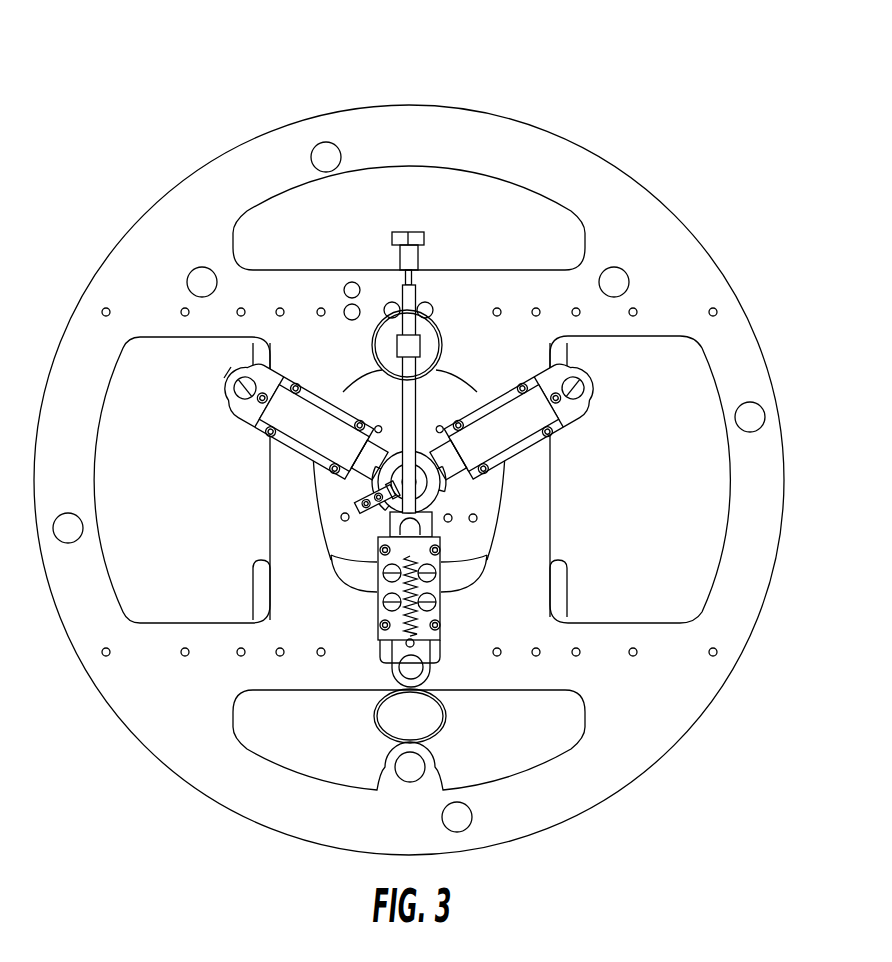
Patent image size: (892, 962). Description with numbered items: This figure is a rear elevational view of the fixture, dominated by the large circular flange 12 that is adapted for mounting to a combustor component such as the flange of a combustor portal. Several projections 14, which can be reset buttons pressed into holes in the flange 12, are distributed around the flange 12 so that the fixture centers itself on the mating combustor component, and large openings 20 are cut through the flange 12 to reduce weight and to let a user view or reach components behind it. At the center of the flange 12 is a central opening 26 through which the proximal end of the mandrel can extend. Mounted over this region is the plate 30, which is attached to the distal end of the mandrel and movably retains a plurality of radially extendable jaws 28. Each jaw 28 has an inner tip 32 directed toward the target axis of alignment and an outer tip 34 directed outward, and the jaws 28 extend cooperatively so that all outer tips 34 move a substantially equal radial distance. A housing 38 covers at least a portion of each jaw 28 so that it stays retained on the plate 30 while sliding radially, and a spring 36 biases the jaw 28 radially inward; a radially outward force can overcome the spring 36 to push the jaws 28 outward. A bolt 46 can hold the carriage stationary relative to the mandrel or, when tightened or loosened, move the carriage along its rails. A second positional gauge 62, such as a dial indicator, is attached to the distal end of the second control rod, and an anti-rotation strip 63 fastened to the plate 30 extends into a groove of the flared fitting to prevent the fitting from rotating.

The flange 12 is at (683, 698).
The projection 14 is at (202, 268).
The openings 20 is at (690, 510).
The central opening 26 is at (272, 452).
The radially extendable jaws 28 is at (580, 412).
The plate 30 is at (343, 511).
The inner tip 32 is at (432, 510).
The outer tip 34 is at (440, 678).
The spring 36 is at (377, 600).
The housing 38 is at (315, 402).
The bolt 46 is at (424, 238).
The second positional gauge 62 is at (385, 338).
The anti-rotation strip 63 is at (378, 552).